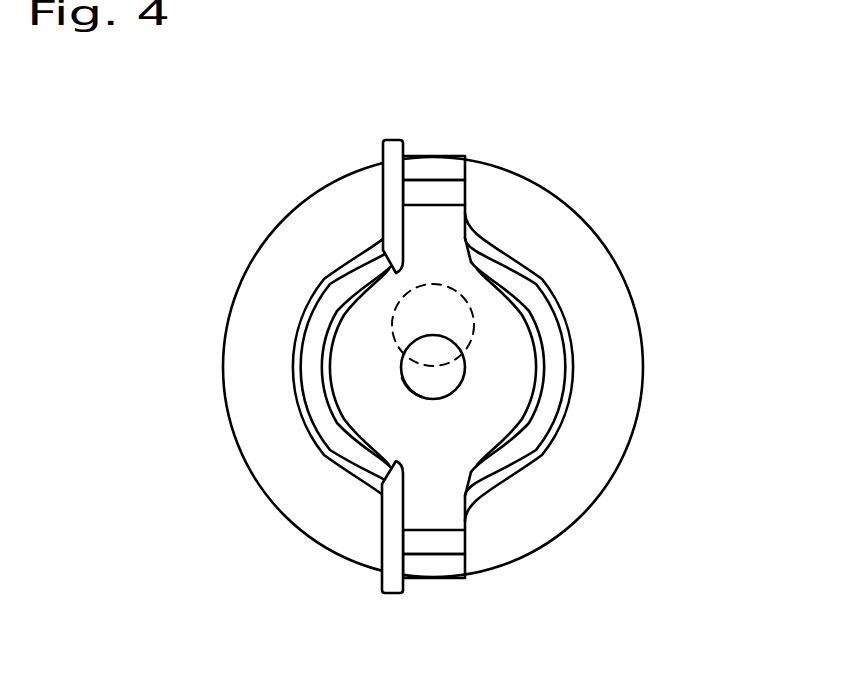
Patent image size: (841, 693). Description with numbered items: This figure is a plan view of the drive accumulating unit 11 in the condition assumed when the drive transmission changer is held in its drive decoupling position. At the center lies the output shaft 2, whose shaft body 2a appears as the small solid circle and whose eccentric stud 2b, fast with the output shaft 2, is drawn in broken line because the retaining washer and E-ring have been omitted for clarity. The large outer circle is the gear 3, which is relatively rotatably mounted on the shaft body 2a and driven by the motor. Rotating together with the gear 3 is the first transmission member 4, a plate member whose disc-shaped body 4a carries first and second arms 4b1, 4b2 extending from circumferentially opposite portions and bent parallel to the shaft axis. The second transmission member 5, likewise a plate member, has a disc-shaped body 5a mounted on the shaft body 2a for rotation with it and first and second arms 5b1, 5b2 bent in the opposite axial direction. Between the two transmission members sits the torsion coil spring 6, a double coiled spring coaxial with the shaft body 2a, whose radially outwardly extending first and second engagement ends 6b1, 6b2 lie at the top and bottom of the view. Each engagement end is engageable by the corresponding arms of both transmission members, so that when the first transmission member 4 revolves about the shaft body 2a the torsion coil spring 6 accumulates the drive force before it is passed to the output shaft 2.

The output shaft 2 is at (400, 369).
The shaft body 2a is at (405, 385).
The eccentric stud 2b is at (390, 316).
The gear 3 is at (530, 180).
The first transmission member 4 is at (313, 290).
The disc-shaped body 4a is at (298, 318).
The first arm 4b1 is at (442, 157).
The second arm 4b2 is at (445, 578).
The second transmission member 5 is at (365, 449).
The disc-shaped body 5a is at (364, 432).
The first arm 5b1 is at (432, 203).
The second arm 5b2 is at (425, 535).
The torsion coil spring 6 is at (537, 282).
The first engagement end 6b1 is at (383, 196).
The second engagement end 6b2 is at (379, 537).
The drive accumulating unit 11 is at (676, 253).